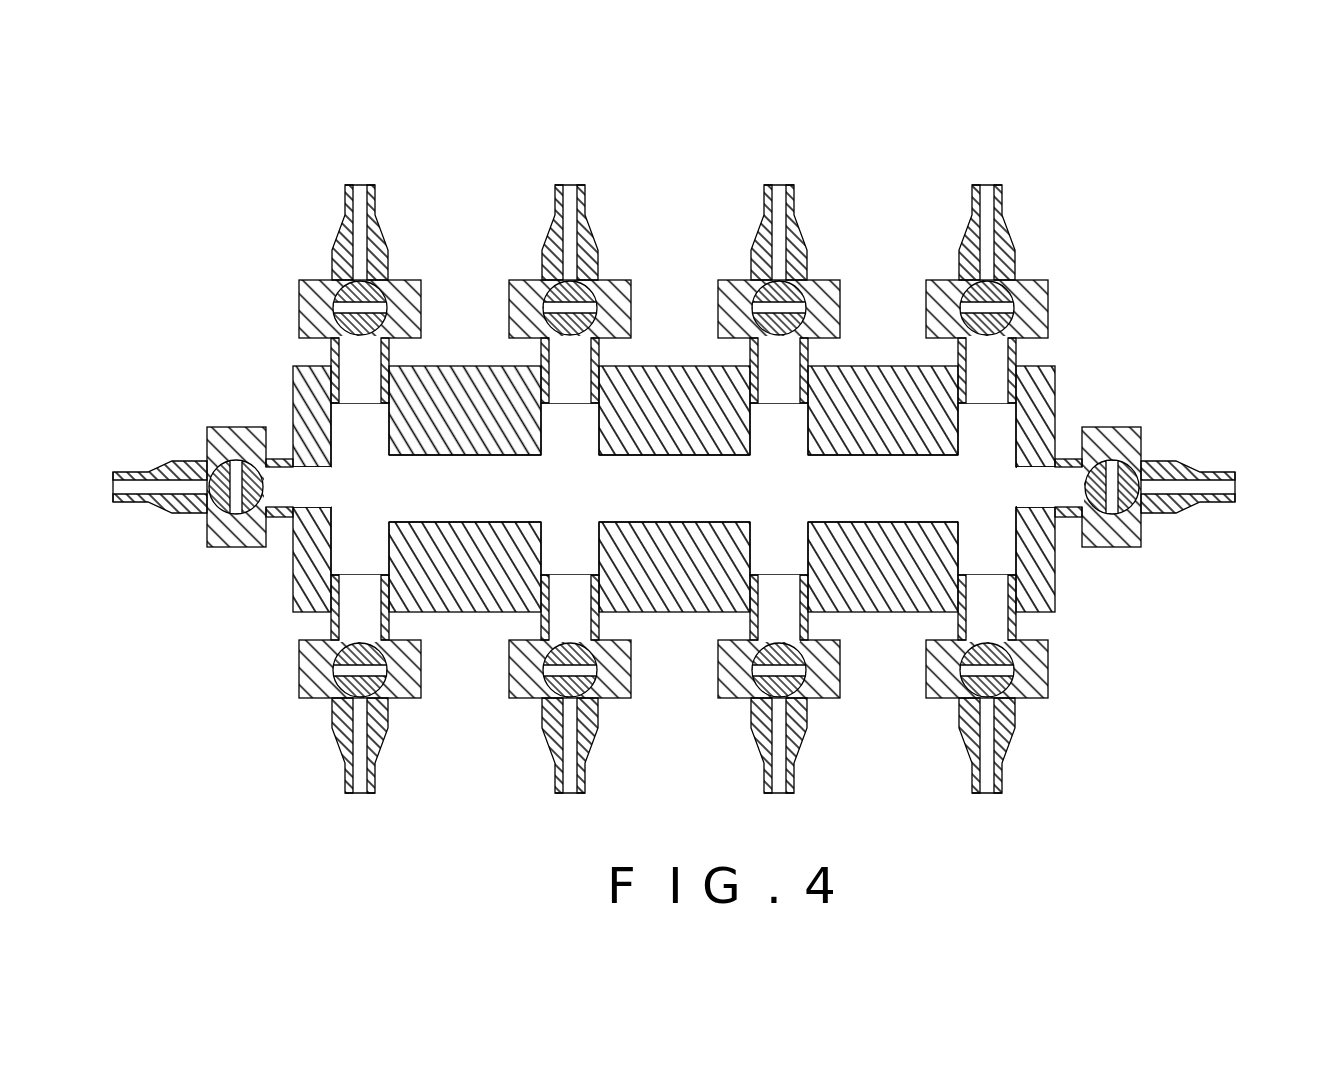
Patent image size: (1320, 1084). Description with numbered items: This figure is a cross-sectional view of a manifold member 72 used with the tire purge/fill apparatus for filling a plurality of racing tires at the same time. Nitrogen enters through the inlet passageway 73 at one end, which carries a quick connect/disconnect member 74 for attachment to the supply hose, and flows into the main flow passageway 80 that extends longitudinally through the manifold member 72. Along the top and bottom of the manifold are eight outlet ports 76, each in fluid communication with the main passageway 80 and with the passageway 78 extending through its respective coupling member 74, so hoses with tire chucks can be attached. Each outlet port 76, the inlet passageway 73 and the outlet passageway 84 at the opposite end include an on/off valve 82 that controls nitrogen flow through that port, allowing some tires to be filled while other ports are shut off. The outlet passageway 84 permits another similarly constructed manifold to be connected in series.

The manifold member 72 is at (731, 137).
The inlet passageway 73 is at (285, 493).
The quick connect/disconnect member 74 is at (385, 225).
The outlet port 76 is at (372, 442).
The passageway 78 is at (582, 250).
The main flow passageway 80 is at (512, 504).
The on/off valve 82 is at (388, 278).
The outlet passageway 84 is at (1060, 490).